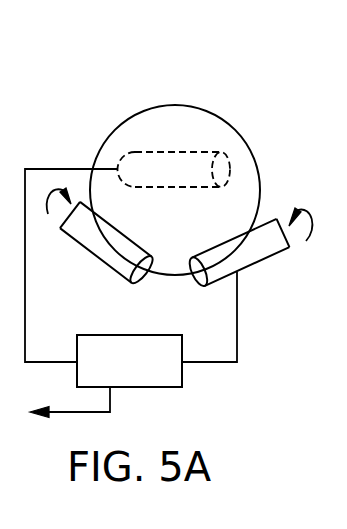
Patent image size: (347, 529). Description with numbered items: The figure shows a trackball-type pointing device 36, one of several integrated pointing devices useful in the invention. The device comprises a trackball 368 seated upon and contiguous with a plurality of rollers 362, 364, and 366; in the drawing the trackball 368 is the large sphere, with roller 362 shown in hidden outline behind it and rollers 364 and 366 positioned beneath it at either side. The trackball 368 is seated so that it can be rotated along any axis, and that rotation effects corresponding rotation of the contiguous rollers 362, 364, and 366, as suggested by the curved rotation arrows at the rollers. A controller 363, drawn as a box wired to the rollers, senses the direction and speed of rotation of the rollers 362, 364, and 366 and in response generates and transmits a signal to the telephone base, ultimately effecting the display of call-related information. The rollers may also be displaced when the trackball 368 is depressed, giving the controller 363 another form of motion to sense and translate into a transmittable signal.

The trackball-type pointing device 36 is at (238, 98).
The trackball 368 is at (147, 108).
The roller 362 is at (174, 169).
The roller 364 is at (108, 251).
The roller 366 is at (251, 254).
The controller 363 is at (142, 388).